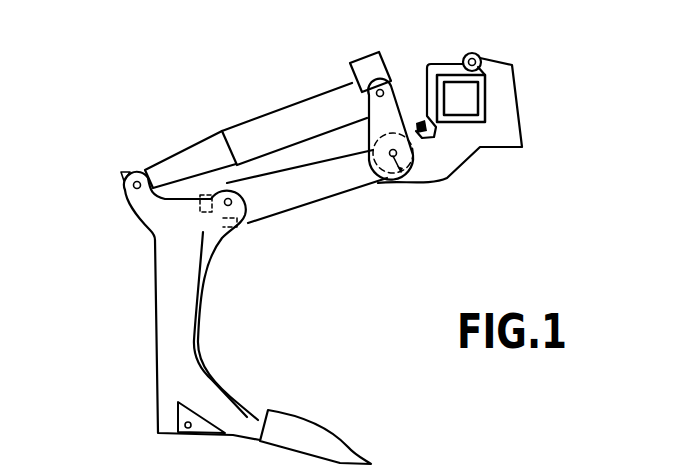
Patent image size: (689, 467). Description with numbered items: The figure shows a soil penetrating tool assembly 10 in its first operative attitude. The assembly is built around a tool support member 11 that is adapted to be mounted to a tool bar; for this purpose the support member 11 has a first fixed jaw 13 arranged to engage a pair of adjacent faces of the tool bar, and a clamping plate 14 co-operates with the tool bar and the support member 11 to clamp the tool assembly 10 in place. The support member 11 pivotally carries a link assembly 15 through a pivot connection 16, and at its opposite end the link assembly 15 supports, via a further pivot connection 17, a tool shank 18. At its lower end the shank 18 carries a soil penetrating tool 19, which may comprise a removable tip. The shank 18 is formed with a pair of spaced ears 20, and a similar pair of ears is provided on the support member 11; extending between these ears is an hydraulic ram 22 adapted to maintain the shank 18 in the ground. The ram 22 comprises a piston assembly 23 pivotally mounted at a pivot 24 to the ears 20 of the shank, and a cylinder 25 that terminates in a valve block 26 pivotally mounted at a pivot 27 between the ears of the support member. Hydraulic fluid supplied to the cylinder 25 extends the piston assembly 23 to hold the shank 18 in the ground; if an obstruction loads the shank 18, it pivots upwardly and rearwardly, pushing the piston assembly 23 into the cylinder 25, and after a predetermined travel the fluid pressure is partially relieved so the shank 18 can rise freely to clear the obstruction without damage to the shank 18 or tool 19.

The soil penetrating tool assembly 10 is at (104, 328).
The tool support member 11 is at (507, 123).
The first fixed jaw 13 is at (499, 85).
The clamping plate 14 is at (447, 64).
The link assembly 15 is at (332, 185).
The pivot connection 16 is at (388, 182).
The pivot connection 17 is at (230, 205).
The tool shank 18 is at (231, 323).
The soil penetrating tool 19 is at (328, 427).
The spaced ears 20 is at (150, 210).
The hydraulic ram 22 is at (236, 108).
The piston assembly 23 is at (178, 152).
The pivot 24 is at (133, 186).
The cylinder 25 is at (313, 97).
The valve block 26 is at (366, 67).
The pivot 27 is at (385, 80).